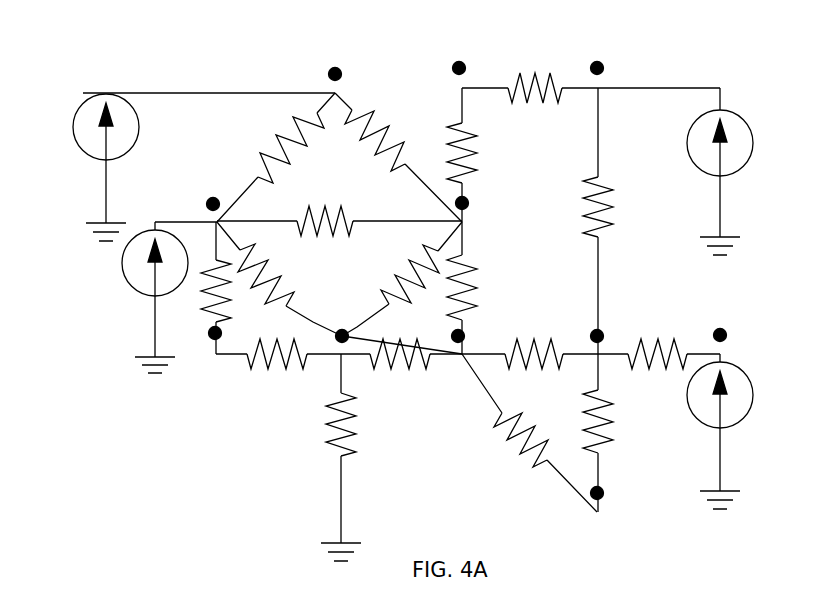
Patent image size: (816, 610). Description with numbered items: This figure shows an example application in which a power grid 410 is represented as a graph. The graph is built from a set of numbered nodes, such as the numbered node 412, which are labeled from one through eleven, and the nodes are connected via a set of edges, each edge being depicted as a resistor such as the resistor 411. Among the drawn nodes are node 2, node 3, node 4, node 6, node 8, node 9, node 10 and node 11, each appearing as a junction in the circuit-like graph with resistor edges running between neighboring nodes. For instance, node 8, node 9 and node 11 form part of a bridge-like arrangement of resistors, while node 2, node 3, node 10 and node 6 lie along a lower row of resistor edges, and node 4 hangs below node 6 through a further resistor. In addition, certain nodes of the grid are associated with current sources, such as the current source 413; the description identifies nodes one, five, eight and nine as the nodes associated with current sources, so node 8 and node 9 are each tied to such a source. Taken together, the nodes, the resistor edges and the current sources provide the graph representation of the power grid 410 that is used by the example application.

The power grid 410 is at (175, 495).
The resistor 411 is at (507, 427).
The numbered node 412 is at (603, 64).
The current source 413 is at (121, 272).
The node 2 is at (215, 356).
The node 3 is at (344, 357).
The node 4 is at (596, 516).
The node 6 is at (589, 344).
The node 8 is at (212, 200).
The node 9 is at (337, 81).
The node 10 is at (466, 345).
The node 11 is at (471, 149).